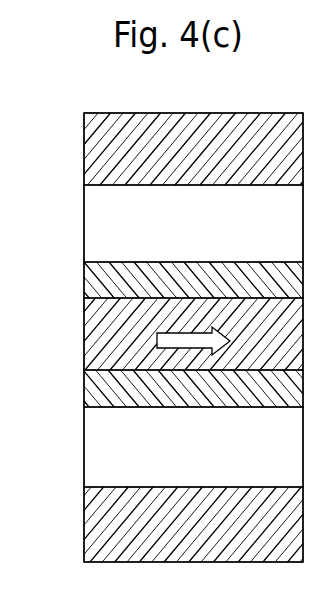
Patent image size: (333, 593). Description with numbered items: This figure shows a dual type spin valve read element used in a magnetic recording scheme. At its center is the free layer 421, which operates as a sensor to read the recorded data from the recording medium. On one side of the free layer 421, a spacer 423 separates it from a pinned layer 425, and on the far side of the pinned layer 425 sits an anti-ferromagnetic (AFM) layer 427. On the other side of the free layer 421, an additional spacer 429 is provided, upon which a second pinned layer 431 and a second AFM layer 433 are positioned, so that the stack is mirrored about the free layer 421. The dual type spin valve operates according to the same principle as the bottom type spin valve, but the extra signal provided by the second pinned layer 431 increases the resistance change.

The second AFM layer 433 is at (87, 155).
The second pinned layer 431 is at (91, 220).
The additional spacer 429 is at (90, 279).
The free layer 421 is at (91, 331).
The spacer 423 is at (91, 388).
The pinned layer 425 is at (91, 444).
The anti-ferromagnetic (AFM) layer 427 is at (91, 524).